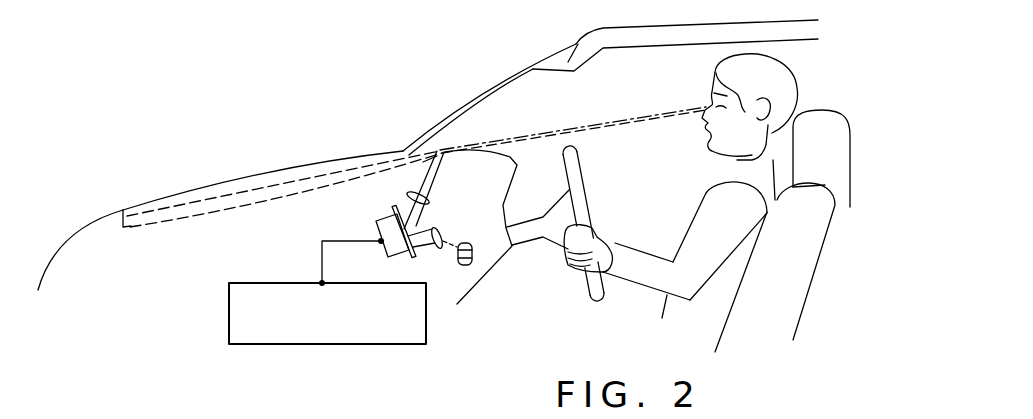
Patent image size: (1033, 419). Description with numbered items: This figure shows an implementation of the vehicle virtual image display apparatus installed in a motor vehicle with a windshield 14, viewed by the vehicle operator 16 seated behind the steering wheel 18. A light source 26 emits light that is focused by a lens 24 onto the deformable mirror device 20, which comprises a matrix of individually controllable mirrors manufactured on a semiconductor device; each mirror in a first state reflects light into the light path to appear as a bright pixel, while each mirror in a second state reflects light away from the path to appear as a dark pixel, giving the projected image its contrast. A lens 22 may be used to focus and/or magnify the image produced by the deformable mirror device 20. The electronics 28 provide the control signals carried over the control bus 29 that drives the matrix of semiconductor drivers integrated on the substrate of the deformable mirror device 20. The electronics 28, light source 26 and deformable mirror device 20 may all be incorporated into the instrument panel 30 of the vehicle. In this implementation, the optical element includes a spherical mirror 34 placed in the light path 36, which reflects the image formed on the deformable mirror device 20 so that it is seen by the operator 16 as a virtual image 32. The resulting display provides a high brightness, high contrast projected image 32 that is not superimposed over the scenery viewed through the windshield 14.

The vehicle windshield 14 is at (522, 60).
The vehicle operator 16 is at (773, 68).
The steering wheel 18 is at (577, 188).
The deformable mirror device 20 is at (376, 224).
The lens 22 is at (407, 196).
The lens 24 is at (443, 232).
The light source 26 is at (472, 260).
The electronics 28 is at (293, 290).
The control bus 29 is at (316, 240).
The instrument panel 30 is at (458, 307).
The virtual image 32 is at (121, 221).
The spherical mirror 34 is at (442, 148).
The light path 36 is at (585, 126).